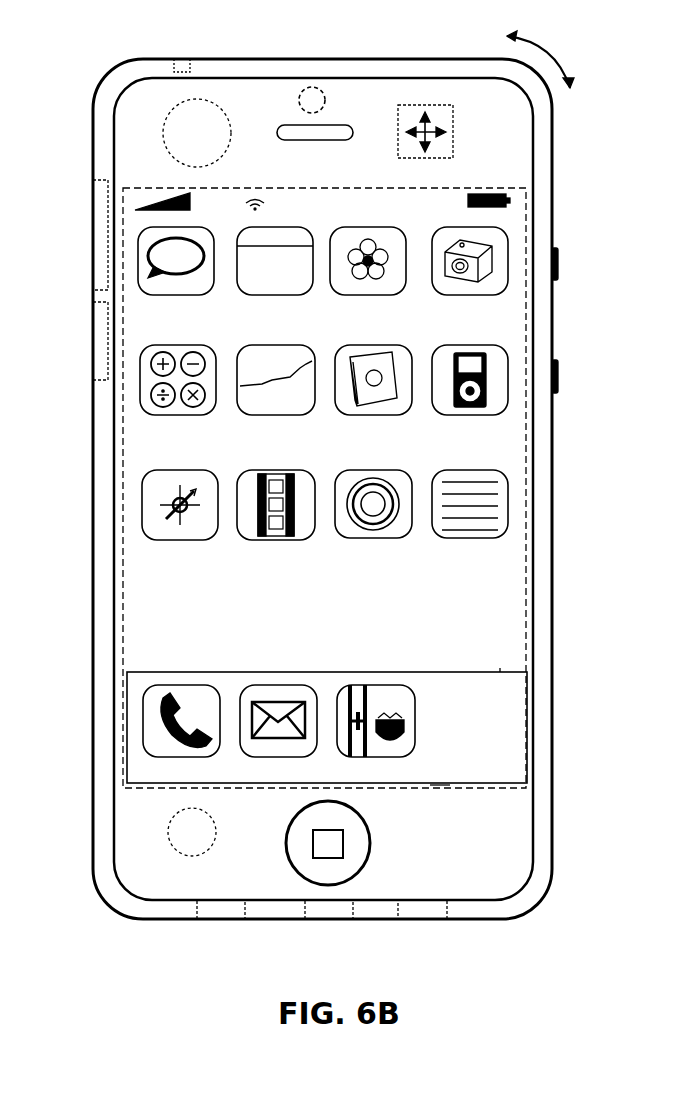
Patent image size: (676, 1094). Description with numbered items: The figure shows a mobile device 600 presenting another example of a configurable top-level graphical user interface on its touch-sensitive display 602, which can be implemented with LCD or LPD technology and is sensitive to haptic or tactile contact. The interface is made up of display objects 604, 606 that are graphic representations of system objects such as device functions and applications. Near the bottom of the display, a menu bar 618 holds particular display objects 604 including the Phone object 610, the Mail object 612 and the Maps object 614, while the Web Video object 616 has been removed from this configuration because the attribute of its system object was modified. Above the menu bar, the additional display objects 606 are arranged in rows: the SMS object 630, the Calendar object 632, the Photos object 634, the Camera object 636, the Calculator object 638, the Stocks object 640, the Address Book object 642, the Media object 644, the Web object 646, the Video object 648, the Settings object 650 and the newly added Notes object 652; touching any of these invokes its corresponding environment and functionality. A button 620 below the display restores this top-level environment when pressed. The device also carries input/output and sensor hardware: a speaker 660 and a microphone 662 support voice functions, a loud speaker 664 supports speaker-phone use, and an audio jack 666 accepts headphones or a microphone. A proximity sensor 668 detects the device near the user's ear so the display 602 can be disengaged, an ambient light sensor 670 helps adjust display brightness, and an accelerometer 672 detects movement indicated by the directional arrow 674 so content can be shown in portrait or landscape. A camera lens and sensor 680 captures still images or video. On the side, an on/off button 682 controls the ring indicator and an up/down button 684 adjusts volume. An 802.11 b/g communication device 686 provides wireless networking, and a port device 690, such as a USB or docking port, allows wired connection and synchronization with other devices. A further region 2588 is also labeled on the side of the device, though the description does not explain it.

The mobile device 600 is at (387, 58).
The touch-sensitive display 602 is at (474, 188).
The display objects 604 is at (372, 710).
The additional display objects 606 is at (372, 379).
The Phone object 610 is at (180, 685).
The Mail object 612 is at (280, 685).
The Maps object 614 is at (385, 685).
The Web Video object 616 is at (516, 684).
The menu bar 618 is at (441, 786).
The button 620 is at (372, 842).
The SMS object 630 is at (206, 296).
The Calendar object 632 is at (305, 296).
The Photos object 634 is at (370, 296).
The Camera object 636 is at (505, 296).
The Calculator object 638 is at (207, 416).
The Stocks object 640 is at (306, 416).
The Address Book object 642 is at (408, 416).
The Media object 644 is at (508, 414).
The Web object 646 is at (208, 540).
The Video object 648 is at (306, 540).
The Settings object 650 is at (408, 538).
The Notes object 652 is at (508, 538).
The speaker 660 is at (313, 141).
The microphone 662 is at (262, 919).
The loud speaker 664 is at (462, 919).
The audio jack 666 is at (192, 62).
The proximity sensor 668 is at (228, 144).
The ambient light sensor 670 is at (212, 848).
The accelerometer 672 is at (455, 130).
The directional arrow 674 is at (565, 62).
The camera lens and sensor 680 is at (328, 104).
The on/off button 682 is at (560, 264).
The up/down button 684 is at (560, 377).
The 802.11 b/g communication device 686 is at (93, 179).
The port device 690 is at (360, 919).
The side sensor region 2588 is at (93, 295).